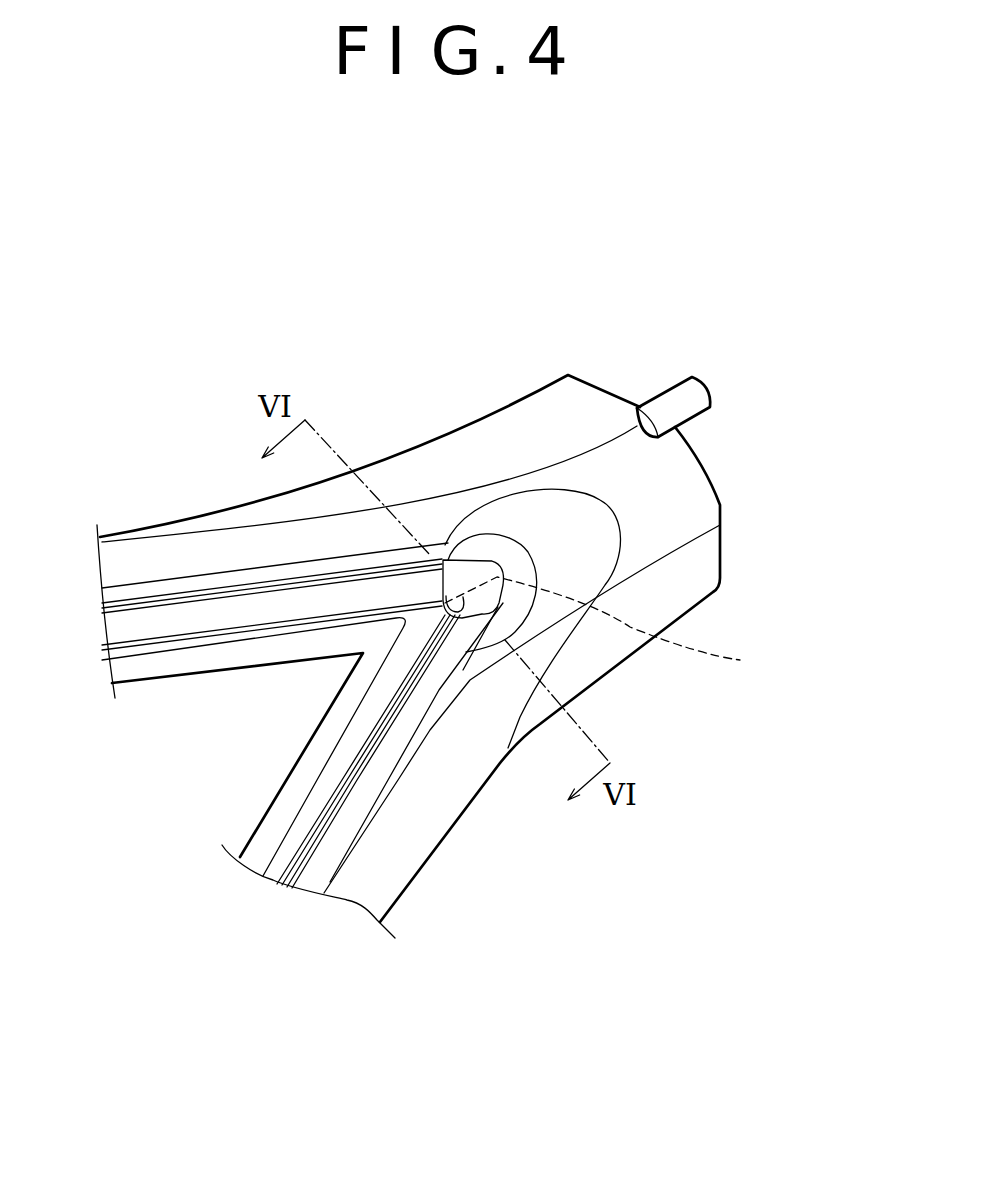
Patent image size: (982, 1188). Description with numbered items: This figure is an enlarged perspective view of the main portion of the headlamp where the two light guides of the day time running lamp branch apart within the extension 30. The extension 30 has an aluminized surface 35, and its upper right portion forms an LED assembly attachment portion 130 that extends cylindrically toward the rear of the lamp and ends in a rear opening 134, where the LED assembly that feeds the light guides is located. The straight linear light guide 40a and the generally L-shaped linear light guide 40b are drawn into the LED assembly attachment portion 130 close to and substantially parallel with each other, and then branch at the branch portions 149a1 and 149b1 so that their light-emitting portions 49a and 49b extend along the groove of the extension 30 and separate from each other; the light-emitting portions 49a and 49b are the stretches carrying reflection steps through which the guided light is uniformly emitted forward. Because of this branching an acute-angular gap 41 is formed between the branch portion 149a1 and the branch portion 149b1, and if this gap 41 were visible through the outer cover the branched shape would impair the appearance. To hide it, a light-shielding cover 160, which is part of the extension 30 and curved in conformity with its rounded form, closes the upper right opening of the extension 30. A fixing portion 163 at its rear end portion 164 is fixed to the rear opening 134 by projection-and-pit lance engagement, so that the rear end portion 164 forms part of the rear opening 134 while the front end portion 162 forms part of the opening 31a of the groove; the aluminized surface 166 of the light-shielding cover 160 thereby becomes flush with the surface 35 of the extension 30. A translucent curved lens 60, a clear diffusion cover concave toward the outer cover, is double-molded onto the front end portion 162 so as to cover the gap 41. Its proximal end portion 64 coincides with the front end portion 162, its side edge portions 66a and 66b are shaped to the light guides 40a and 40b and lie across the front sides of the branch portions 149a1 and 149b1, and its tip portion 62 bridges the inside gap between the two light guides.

The LED assembly attachment portion 130 is at (522, 370).
The extension 30 is at (122, 522).
The opening of the groove 31a is at (225, 578).
The straight linear light guide 40a is at (188, 634).
The generally L-shaped linear light guide 40b is at (330, 822).
The light-emitting portion 49a is at (370, 587).
The light-emitting portion 49b is at (367, 788).
The surface of the extension 35 is at (547, 412).
The fixing portion 163 is at (678, 398).
The surface of the light-shielding cover 166 is at (697, 448).
The light-shielding cover 160 is at (712, 484).
The rear end portion 164 is at (722, 502).
The rear opening 134 is at (738, 556).
The curved lens 60 is at (515, 553).
The tip portion 62 is at (432, 612).
The proximal end portion 64 is at (496, 559).
The side edge portion 66a is at (455, 558).
The side edge portion 66b is at (510, 642).
The front end portion 162 is at (505, 637).
The gap 41 is at (740, 660).
The branch portion 149a1 is at (427, 543).
The branch portion 149b1 is at (470, 600).